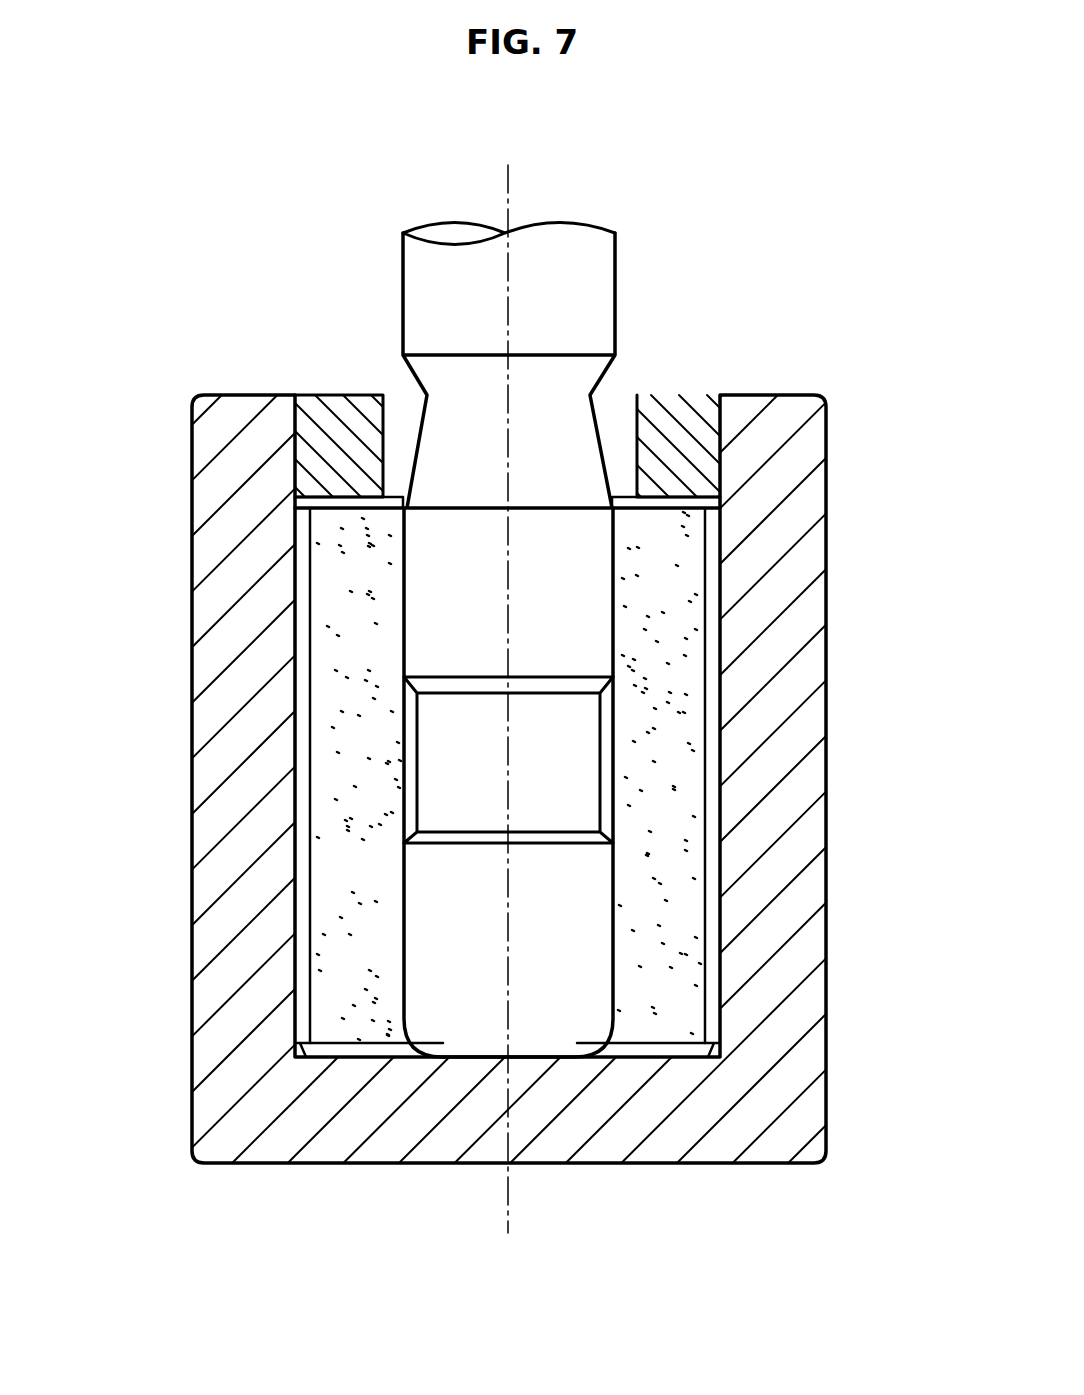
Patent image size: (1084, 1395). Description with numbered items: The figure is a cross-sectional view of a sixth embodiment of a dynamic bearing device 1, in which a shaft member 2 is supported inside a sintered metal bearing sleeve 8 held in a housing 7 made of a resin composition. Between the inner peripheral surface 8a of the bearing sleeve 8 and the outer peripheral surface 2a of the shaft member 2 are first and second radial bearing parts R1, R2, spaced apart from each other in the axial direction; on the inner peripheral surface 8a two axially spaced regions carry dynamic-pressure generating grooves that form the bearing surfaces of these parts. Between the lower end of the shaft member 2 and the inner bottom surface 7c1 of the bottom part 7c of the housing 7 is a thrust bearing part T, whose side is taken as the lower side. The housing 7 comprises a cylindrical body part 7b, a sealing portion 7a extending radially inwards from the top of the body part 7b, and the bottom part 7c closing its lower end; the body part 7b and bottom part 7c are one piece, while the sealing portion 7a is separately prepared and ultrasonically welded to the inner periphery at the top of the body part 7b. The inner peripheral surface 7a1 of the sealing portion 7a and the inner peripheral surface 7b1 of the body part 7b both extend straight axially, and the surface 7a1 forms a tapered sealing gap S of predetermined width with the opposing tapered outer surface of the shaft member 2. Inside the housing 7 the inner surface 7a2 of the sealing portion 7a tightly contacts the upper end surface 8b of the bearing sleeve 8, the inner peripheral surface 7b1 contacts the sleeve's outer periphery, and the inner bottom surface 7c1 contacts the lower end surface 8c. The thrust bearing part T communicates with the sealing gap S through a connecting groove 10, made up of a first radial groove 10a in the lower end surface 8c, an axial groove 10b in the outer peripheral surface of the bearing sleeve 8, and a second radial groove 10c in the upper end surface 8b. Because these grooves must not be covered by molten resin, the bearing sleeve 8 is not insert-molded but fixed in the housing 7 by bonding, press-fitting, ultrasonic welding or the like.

The fuel injection valve / assembly 1 is at (497, 705).
The shaft member 2 is at (507, 689).
The outer peripheral surface of the shaft member 2a is at (538, 1058).
The housing 7 is at (497, 786).
The sealing portion 7a is at (340, 412).
The inner peripheral surface of the sealing portion 7a1 is at (635, 444).
The inner surface of the sealing portion 7a2 is at (330, 516).
The body part 7b is at (215, 665).
The inner peripheral surface of the body part 7b1 is at (303, 862).
The bottom part 7c is at (437, 1150).
The inner bottom surface of the bottom part 7c1 is at (376, 1045).
The bearing sleeve 8 is at (619, 790).
The inner peripheral surface of the bearing sleeve 8a is at (612, 908).
The upper end surface of the bearing sleeve 8b is at (681, 492).
The lower end surface of the bearing sleeve 8c is at (678, 1058).
The connecting groove 10 is at (405, 835).
The first radial groove 10a is at (322, 1047).
The axial groove 10b is at (305, 725).
The second radial groove 10c is at (327, 497).
The sealing gap S is at (398, 408).
The thrust bearing part T is at (598, 1068).
The first radial bearing part R1 is at (404, 600).
The second radial bearing part R2 is at (404, 960).